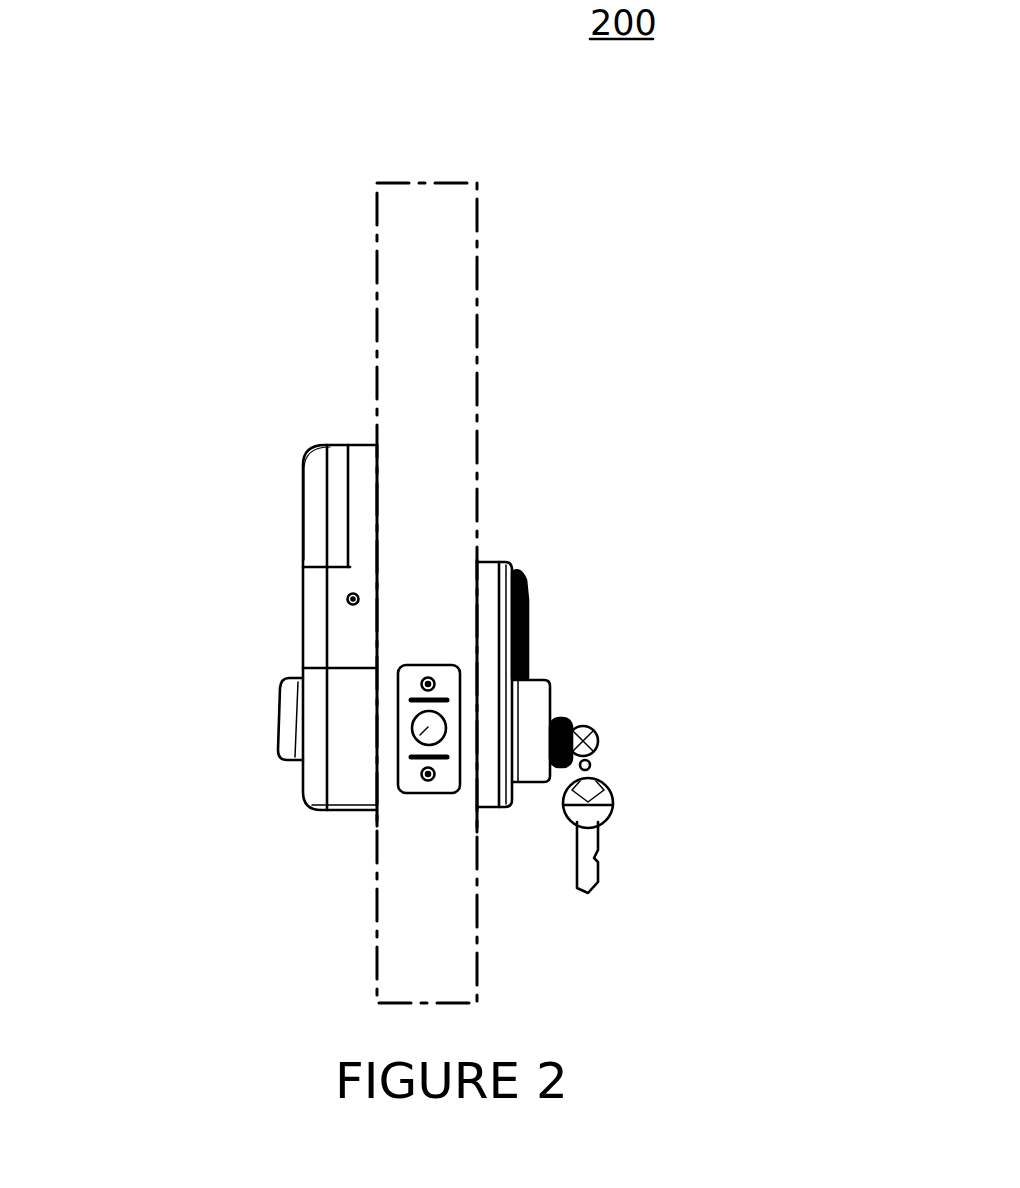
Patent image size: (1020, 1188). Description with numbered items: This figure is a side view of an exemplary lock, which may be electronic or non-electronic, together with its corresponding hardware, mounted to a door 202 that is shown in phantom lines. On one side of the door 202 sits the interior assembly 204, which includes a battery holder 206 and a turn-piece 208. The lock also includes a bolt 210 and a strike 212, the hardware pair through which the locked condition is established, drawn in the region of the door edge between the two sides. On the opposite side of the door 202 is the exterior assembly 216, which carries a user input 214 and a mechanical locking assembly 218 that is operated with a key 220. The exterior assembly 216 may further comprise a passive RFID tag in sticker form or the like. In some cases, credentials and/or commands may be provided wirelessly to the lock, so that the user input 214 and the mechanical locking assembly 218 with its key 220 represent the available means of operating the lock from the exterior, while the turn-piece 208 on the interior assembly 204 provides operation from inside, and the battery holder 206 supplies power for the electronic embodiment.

The door 202 is at (422, 182).
The interior assembly 204 is at (258, 483).
The battery holder 206 is at (303, 512).
The turn-piece 208 is at (278, 718).
The bolt 210 is at (418, 735).
The strike 212 is at (423, 793).
The user input 214 is at (557, 619).
The exterior assembly 216 is at (636, 580).
The mechanical locking assembly 218 is at (607, 693).
The key 220 is at (612, 722).